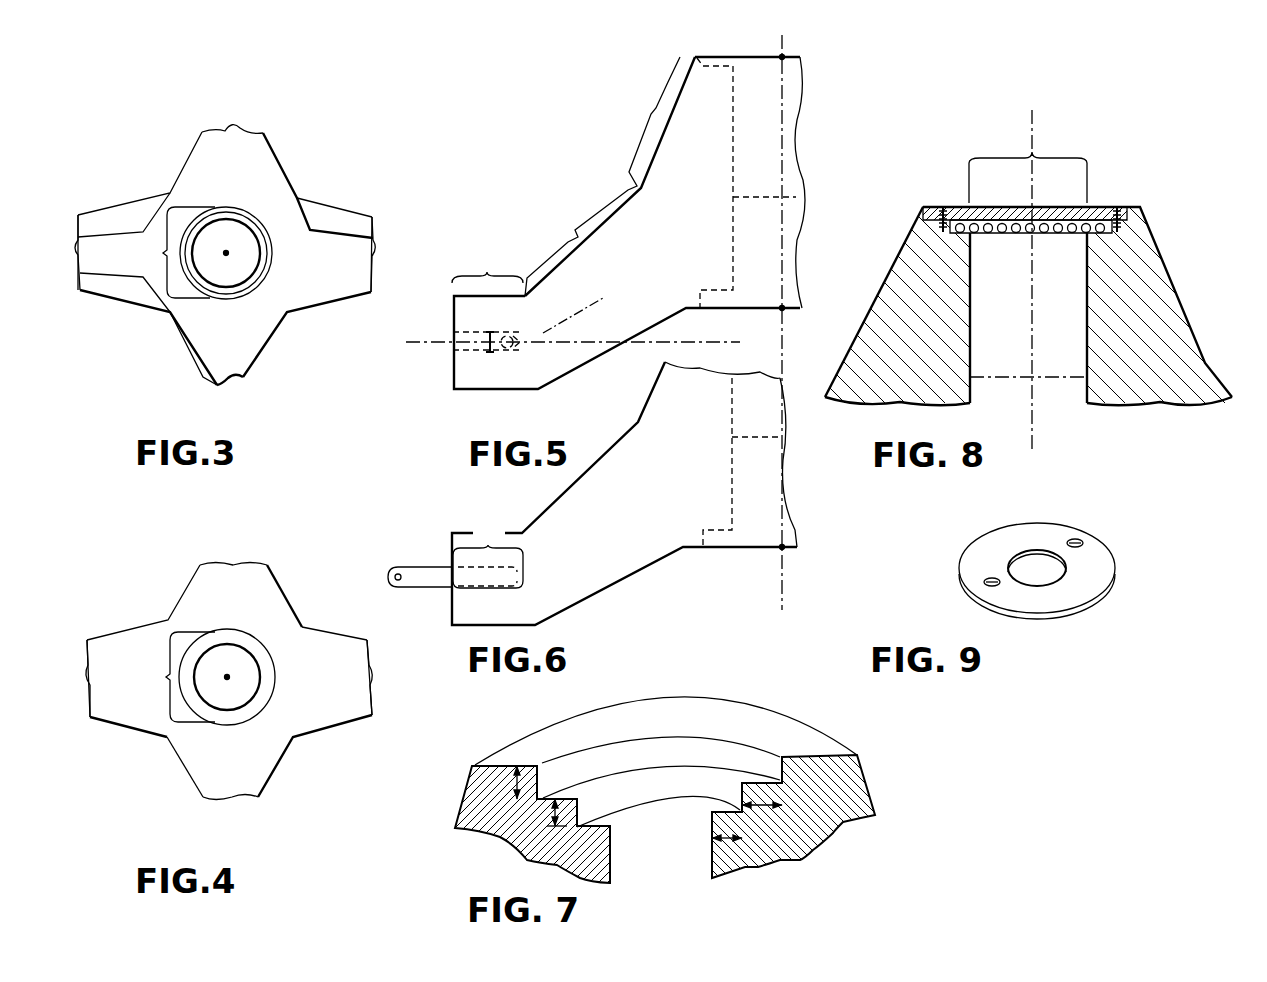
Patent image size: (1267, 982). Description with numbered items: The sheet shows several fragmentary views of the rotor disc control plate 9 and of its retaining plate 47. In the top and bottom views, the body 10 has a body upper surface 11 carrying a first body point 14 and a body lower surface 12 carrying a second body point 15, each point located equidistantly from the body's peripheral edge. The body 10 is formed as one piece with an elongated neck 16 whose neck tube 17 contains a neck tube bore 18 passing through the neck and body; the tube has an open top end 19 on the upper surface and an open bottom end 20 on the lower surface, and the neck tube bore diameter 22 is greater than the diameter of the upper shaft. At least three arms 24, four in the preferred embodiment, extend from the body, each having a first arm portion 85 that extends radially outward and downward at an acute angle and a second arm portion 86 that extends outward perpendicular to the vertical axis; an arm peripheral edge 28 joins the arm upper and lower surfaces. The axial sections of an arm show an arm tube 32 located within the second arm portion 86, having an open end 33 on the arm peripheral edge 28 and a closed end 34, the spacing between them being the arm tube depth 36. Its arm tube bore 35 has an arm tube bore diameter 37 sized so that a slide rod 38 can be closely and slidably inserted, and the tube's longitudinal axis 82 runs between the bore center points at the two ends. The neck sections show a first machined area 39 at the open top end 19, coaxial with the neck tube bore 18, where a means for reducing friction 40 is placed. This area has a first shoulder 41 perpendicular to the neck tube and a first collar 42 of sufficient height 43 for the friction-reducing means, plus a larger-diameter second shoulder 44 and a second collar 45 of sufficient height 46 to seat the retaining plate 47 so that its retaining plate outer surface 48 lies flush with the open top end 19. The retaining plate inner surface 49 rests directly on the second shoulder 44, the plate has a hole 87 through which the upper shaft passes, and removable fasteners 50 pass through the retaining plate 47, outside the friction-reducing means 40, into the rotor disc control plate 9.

In FIG. 8, the rotor disc control plate 9 is at (885, 260).
In FIG. 8, the body 10 is at (1133, 323).
In FIG. 3, the body upper surface 11 is at (306, 264).
In FIG. 4, the body lower surface 12 is at (320, 695).
In FIG. 3, the first body point 14 is at (226, 253).
In FIG. 4, the second body point 15 is at (227, 677).
In FIG. 5, the elongated neck 16 is at (654, 119).
In FIG. 3, the neck tube 17 is at (210, 280).
In FIG. 7, the neck tube 17 is at (737, 850).
In FIG. 3, the neck tube bore 18 is at (233, 270).
In FIG. 7, the neck tube bore 18 is at (651, 852).
In FIG. 3, the open top end 19 is at (174, 252).
In FIG. 4, the open bottom end 20 is at (174, 677).
In FIG. 5, the neck tube bore diameter 22 is at (753, 197).
In FIG. 6, the neck tube bore diameter 22 is at (750, 437).
In FIG. 8, the neck tube bore diameter 22 is at (1048, 377).
In FIG. 3, the arms 24 is at (225, 124).
In FIG. 4, the arms 24 is at (226, 565).
In FIG. 5, the arms 24 is at (627, 337).
In FIG. 6, the arms 24 is at (600, 539).
In FIG. 5, the arm peripheral edge 28 is at (569, 318).
In FIG. 5, the arm tube 32 is at (473, 336).
In FIG. 5, the open end 33 is at (452, 348).
In FIG. 5, the closed end 34 is at (521, 344).
In FIG. 5, the arm tube bore 35 is at (512, 335).
In FIG. 6, the arm tube depth 36 is at (488, 554).
In FIG. 5, the arm tube bore diameter 37 is at (492, 341).
In FIG. 6, the slide rod 38 is at (433, 573).
In FIG. 7, the first machined area 39 is at (645, 789).
In FIG. 8, the means for reducing friction 40 is at (1007, 237).
In FIG. 7, the first shoulder 41 is at (557, 862).
In FIG. 7, the first collar 42 is at (620, 795).
In FIG. 7, the height 43 is at (520, 830).
In FIG. 7, the second shoulder 44 is at (865, 785).
In FIG. 7, the second collar 45 is at (758, 763).
In FIG. 7, the height 46 is at (483, 783).
In FIG. 8, the retaining plate 47 is at (1095, 212).
In FIG. 9, the retaining plate 47 is at (960, 577).
In FIG. 8, the retaining plate outer surface 48 is at (957, 207).
In FIG. 9, the retaining plate outer surface 48 is at (1083, 582).
In FIG. 9, the retaining plate inner surface 49 is at (1070, 620).
In FIG. 8, the removable fasteners 50 is at (943, 225).
In FIG. 9, the removable fasteners 50 is at (1077, 542).
In FIG. 5, the longitudinal axis 82 is at (575, 342).
In FIG. 5, the first arm portion 85 is at (602, 176).
In FIG. 5, the second arm portion 86 is at (487, 265).
In FIG. 8, the hole 87 is at (1032, 152).
In FIG. 9, the hole 87 is at (1040, 568).